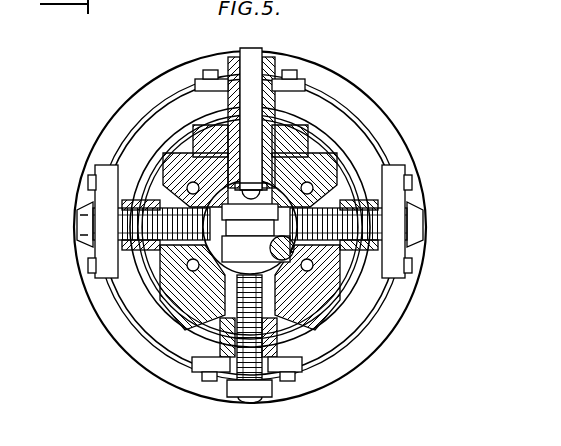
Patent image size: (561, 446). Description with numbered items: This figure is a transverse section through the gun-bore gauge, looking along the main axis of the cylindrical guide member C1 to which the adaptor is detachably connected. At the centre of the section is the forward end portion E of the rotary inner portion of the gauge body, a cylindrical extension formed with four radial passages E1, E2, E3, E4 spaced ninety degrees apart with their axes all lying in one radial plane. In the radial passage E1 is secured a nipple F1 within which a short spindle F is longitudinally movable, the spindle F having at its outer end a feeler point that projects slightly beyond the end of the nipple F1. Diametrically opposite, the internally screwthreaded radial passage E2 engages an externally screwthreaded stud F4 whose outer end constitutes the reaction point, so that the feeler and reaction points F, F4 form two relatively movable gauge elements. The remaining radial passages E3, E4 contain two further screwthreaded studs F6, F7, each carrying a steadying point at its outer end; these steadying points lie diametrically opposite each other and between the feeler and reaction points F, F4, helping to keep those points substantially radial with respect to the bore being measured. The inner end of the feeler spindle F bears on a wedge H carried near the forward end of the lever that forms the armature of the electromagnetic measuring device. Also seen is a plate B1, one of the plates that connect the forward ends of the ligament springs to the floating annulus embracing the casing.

The cylindrical guide member C1 is at (140, 108).
The forward end portion E is at (210, 158).
The radial passage E1 is at (305, 110).
The radial passage E2 is at (183, 325).
The radial passage E3 is at (233, 285).
The radial passage E4 is at (300, 178).
The spindle F is at (250, 62).
The nipple F1 is at (268, 78).
The screwthreaded stud F4 is at (275, 380).
The screwthreaded stud F6 is at (92, 241).
The screwthreaded stud F7 is at (425, 230).
The wedge H is at (300, 150).
The plate B1 is at (210, 83).